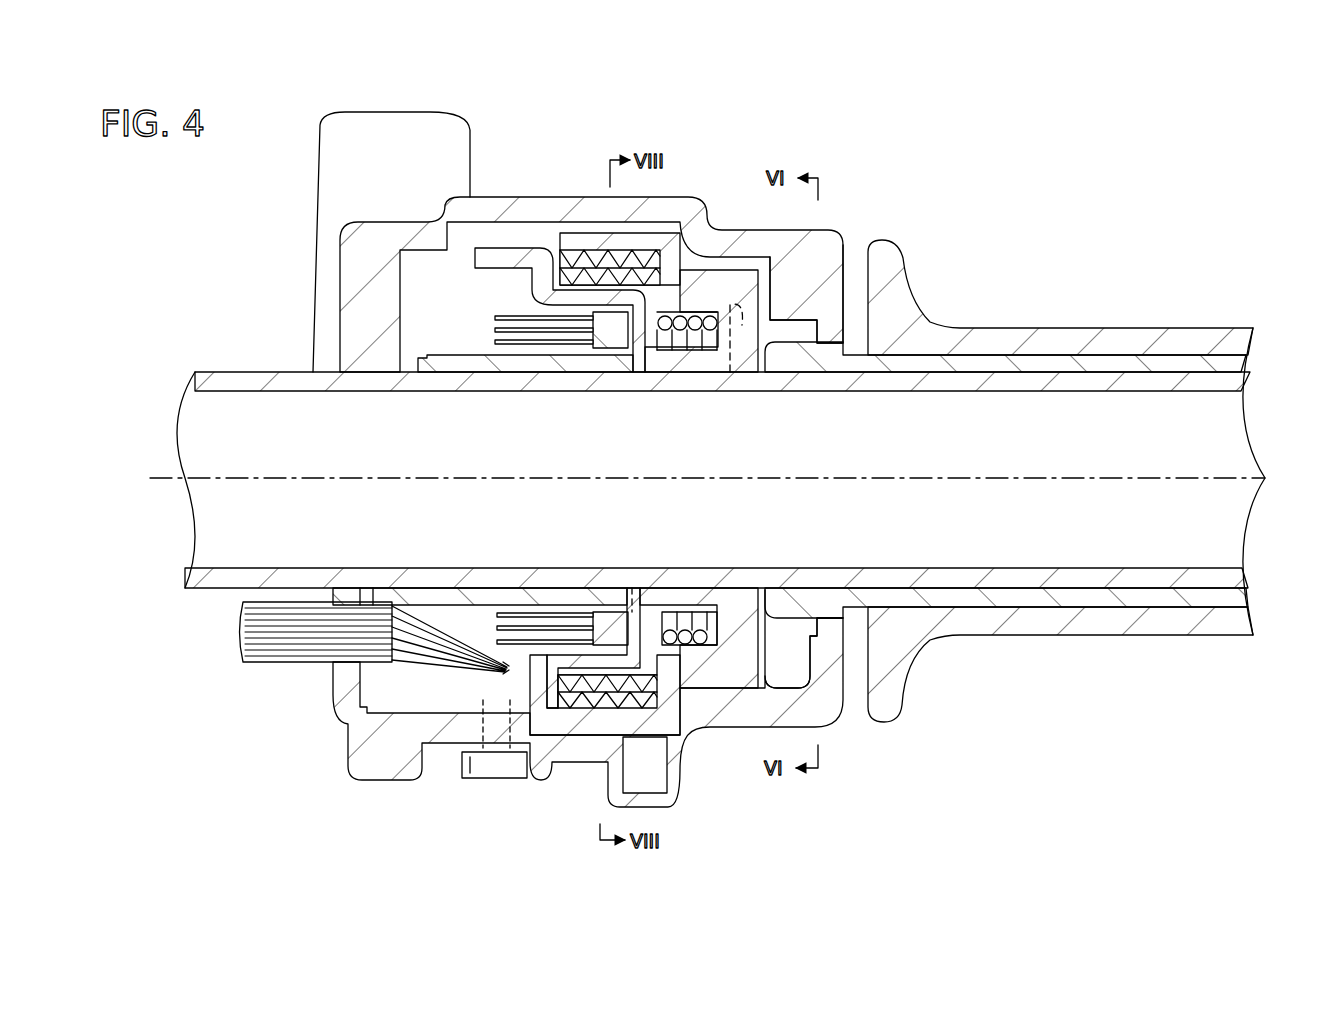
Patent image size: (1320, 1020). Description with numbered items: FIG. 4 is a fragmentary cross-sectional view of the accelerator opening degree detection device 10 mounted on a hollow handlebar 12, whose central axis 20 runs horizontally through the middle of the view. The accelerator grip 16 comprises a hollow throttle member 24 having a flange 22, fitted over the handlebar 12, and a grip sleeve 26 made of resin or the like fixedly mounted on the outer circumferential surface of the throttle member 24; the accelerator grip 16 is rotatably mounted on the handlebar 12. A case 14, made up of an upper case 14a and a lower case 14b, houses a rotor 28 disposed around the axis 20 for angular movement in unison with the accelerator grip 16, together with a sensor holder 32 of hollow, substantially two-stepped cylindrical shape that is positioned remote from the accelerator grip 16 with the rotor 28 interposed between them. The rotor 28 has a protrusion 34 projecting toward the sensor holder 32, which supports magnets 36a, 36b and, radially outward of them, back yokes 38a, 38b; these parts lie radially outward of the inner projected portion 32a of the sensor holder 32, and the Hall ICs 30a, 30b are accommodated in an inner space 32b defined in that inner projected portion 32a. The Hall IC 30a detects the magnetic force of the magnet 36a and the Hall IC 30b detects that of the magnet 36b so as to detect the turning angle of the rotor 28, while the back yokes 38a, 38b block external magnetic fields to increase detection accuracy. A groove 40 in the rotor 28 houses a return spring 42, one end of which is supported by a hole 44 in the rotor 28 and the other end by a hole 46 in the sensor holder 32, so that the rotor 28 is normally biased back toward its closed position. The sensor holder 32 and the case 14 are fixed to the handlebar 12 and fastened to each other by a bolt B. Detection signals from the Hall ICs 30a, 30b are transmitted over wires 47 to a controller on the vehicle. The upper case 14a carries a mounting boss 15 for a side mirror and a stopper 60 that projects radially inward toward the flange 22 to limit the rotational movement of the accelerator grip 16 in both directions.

The accelerator opening degree detection device 10 is at (1090, 220).
The handlebar 12 is at (228, 380).
The case 14 is at (489, 196).
The upper case 14a is at (832, 244).
The lower case 14b is at (746, 725).
The mounting boss 15 is at (460, 131).
The accelerator grip 16 is at (1138, 292).
The axis 20 is at (176, 476).
The flange 22 is at (800, 680).
The throttle member 24 is at (1246, 600).
The grip sleeve 26 is at (1166, 620).
The rotor 28 is at (728, 272).
The Hall IC 30a is at (584, 349).
The Hall IC 30b is at (601, 632).
The sensor holder 32 is at (526, 362).
The inner projected portion 32a is at (545, 620).
The inner space 32b is at (578, 346).
The protrusion 34 is at (640, 240).
The magnet 36a is at (578, 277).
The magnet 36b is at (565, 697).
The back yoke 38a is at (583, 257).
The back yoke 38b is at (575, 712).
The groove 40 is at (654, 332).
The return spring 42 is at (702, 625).
The hole 44 is at (730, 372).
The hole 46 is at (631, 585).
The wires 47 is at (415, 655).
The stopper 60 is at (797, 305).
The bolt B is at (462, 760).